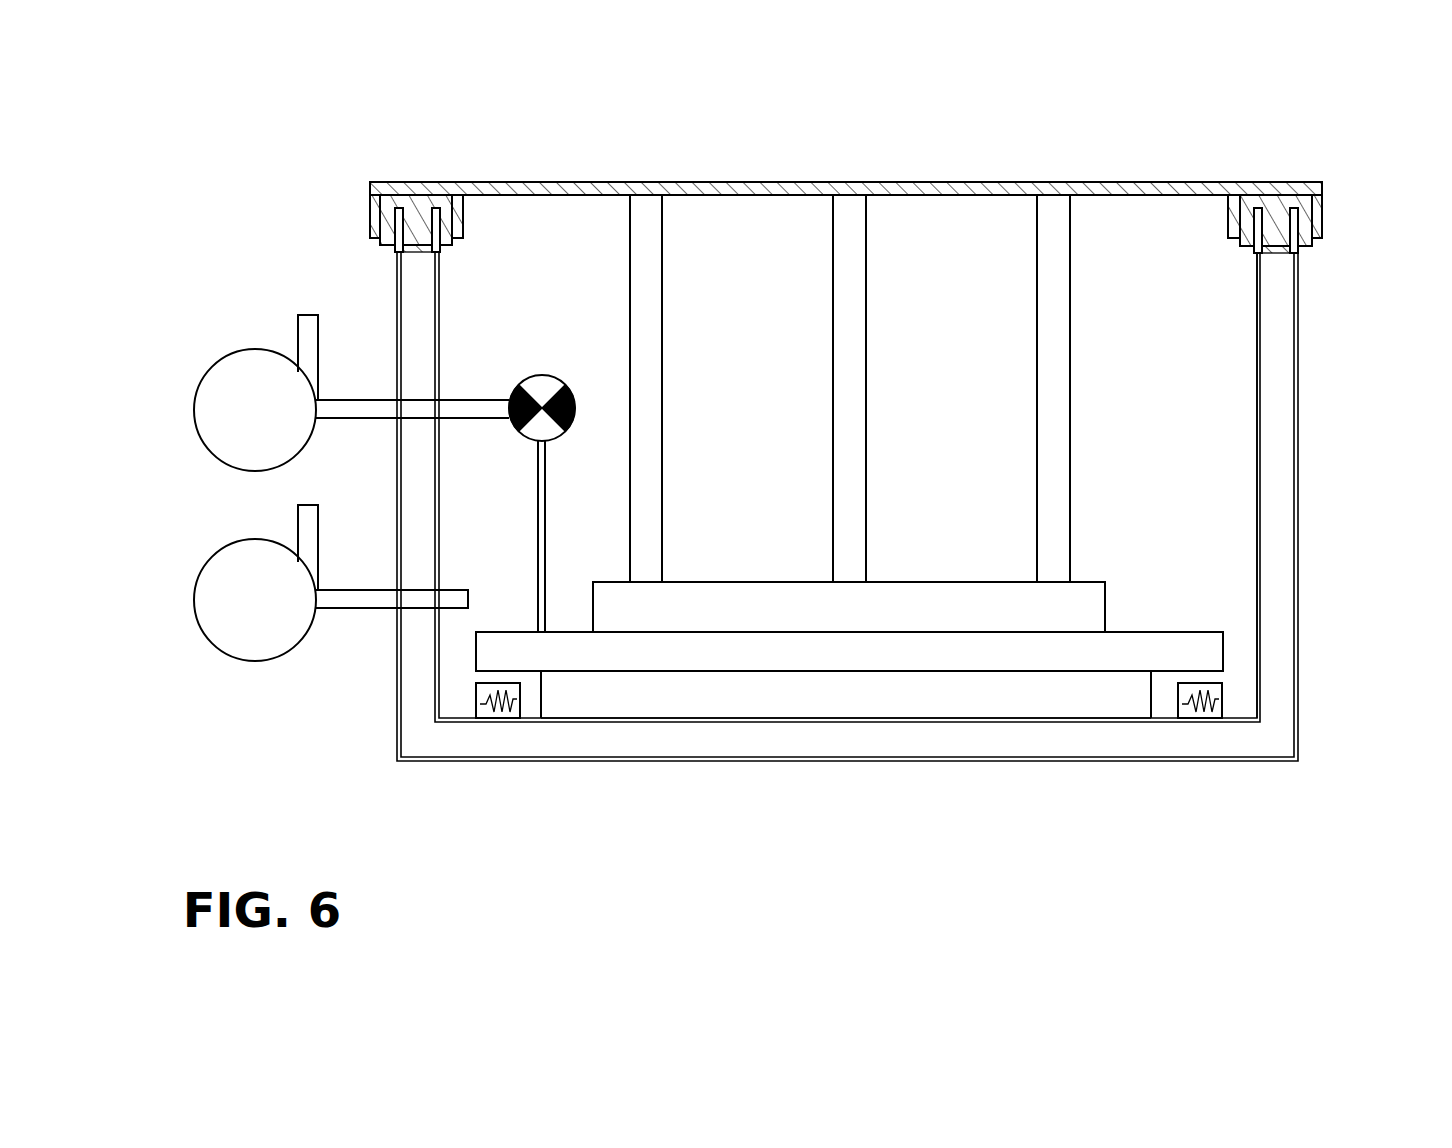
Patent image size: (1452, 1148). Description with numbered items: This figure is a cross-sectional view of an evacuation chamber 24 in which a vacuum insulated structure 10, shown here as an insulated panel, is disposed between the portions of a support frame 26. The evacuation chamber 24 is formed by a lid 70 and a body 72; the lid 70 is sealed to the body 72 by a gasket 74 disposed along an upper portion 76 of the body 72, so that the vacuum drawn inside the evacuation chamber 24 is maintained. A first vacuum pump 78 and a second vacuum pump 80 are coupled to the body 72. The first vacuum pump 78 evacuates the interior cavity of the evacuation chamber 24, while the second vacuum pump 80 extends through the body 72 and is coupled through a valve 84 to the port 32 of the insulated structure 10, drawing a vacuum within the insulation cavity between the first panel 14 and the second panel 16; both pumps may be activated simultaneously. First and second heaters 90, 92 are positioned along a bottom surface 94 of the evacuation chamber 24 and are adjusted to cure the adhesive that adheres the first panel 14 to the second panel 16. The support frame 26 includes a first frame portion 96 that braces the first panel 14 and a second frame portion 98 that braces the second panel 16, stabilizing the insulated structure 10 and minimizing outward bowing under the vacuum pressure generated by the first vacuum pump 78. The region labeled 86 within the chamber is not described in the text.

The vacuum insulated structure 10 is at (852, 652).
The first panel 14 is at (1183, 630).
The second panel 16 is at (1105, 672).
The evacuation chamber 24 is at (1193, 182).
The support frame 26 is at (1072, 332).
The port 32 is at (537, 632).
The lid 70 is at (815, 182).
The body 72 is at (1280, 657).
The gasket 74 is at (418, 205).
The upper portion 76 is at (1293, 300).
The first vacuum pump 78 is at (222, 552).
The second vacuum pump 80 is at (222, 362).
The valve 84 is at (548, 375).
The chamber 86 is at (1155, 378).
The first heater 90 is at (480, 715).
The second heater 92 is at (1208, 710).
The bottom surface 94 is at (530, 718).
The first frame portion 96 is at (1072, 596).
The second frame portion 98 is at (993, 700).